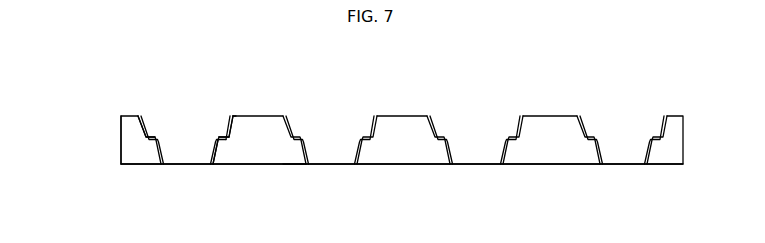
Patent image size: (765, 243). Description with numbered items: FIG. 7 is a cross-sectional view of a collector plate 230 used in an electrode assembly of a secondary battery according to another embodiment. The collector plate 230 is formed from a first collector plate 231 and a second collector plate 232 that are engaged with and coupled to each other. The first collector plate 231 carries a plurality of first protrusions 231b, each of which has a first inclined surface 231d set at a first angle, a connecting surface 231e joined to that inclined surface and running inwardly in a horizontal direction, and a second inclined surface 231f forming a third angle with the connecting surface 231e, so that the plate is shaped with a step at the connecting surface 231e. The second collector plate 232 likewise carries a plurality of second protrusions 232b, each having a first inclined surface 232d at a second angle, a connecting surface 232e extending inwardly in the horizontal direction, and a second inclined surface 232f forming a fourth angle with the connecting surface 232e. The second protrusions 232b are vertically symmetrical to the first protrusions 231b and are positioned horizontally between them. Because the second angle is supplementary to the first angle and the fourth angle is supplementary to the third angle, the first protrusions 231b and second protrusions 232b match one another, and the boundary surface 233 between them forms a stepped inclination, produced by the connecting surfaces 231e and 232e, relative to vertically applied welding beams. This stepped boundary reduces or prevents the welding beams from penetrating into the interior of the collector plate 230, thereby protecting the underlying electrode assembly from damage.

The collector plate 230 is at (95, 79).
The first collector plate 231 is at (174, 109).
The first protrusions 231b is at (156, 124).
The first inclined surface 231d is at (235, 117).
The connecting surface 231e is at (226, 124).
The second inclined surface 231f is at (204, 130).
The second collector plate 232 is at (283, 171).
The second protrusions 232b is at (292, 157).
The first inclined surface 232d is at (232, 121).
The connecting surface 232e is at (219, 151).
The second inclined surface 232f is at (216, 165).
The boundary surface 233 is at (136, 113).